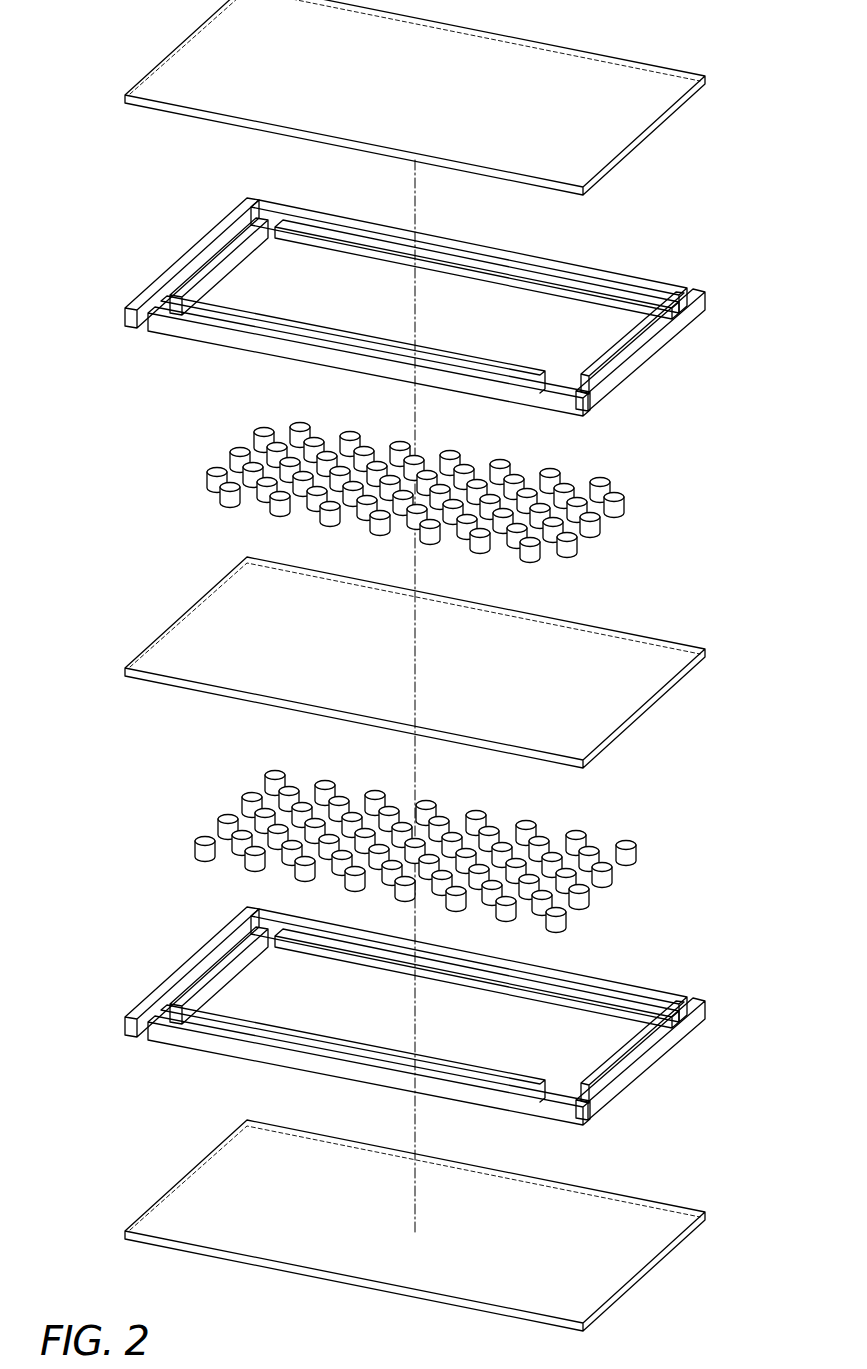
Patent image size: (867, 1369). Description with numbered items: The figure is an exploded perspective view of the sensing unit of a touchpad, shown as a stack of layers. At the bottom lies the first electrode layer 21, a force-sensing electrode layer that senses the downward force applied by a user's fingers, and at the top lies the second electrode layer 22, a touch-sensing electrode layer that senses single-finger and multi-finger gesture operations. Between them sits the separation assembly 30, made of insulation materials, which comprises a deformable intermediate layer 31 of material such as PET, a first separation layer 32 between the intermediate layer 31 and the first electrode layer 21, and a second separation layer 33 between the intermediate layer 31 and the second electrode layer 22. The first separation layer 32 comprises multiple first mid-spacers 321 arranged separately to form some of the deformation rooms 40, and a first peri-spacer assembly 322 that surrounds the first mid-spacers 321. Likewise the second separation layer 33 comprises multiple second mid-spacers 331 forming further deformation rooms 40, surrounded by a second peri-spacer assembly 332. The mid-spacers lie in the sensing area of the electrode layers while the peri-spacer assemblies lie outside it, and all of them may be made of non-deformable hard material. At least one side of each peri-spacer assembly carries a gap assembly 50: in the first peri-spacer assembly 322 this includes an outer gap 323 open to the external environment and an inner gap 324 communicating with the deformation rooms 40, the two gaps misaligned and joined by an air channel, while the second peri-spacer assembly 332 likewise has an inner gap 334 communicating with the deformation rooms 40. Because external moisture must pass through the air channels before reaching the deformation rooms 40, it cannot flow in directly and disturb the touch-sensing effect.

The first electrode layer 21 is at (160, 1200).
The second electrode layer 22 is at (158, 64).
The separation assembly 30 is at (419, 666).
The intermediate layer 31 is at (660, 641).
The first separation layer 32 is at (457, 991).
The first mid-spacers 321 is at (639, 848).
The first peri-spacer assembly 322 is at (648, 1066).
The outer gap 323 is at (489, 965).
The inner gap 324 is at (424, 977).
The second separation layer 33 is at (451, 375).
The second mid-spacers 331 is at (627, 503).
The second peri-spacer assembly 332 is at (630, 388).
The inner gap 334 is at (276, 239).
The deformation rooms 40 is at (445, 678).
The gap assembly 50 is at (689, 287).